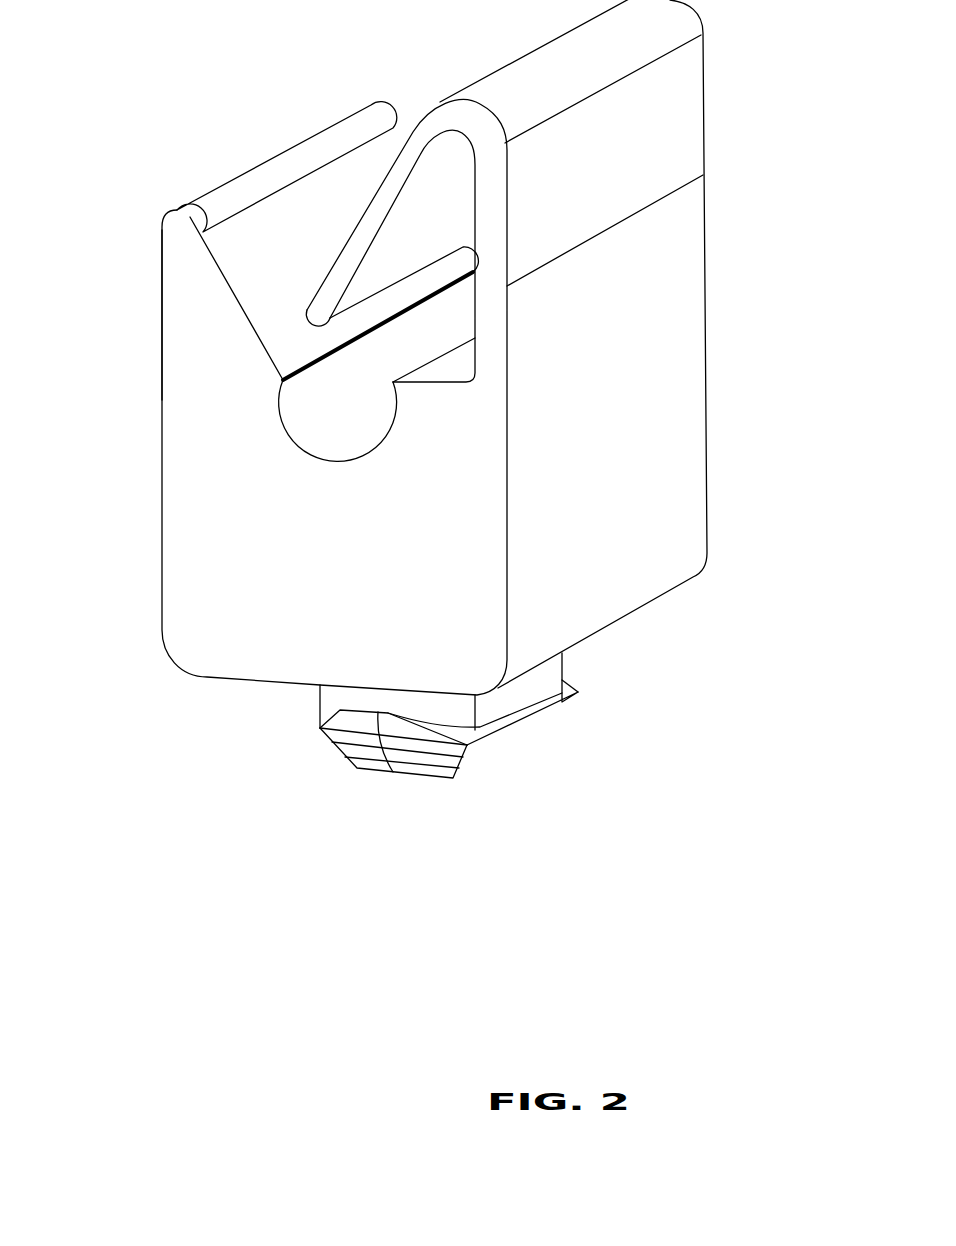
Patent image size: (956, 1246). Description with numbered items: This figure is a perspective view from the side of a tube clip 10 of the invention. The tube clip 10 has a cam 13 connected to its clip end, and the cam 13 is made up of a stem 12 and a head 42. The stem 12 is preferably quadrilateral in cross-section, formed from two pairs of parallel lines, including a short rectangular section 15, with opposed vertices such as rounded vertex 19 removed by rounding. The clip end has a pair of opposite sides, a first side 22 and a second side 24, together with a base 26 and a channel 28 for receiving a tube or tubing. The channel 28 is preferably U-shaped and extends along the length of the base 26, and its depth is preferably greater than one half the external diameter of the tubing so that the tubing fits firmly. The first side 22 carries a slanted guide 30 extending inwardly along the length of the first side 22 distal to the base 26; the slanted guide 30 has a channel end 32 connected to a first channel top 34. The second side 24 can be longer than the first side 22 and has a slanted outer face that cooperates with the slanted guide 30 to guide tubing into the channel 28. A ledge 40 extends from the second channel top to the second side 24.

The tube clip 10 is at (101, 77).
The stem 12 is at (453, 717).
The cam 13 is at (382, 703).
The short rectangular section 15 is at (322, 702).
The rounded vertex 19 is at (505, 712).
The first side 22 is at (160, 247).
The second side 24 is at (637, 146).
The base 26 is at (203, 507).
The channel 28 is at (280, 423).
The slanted guide 30 is at (281, 176).
The channel end 32 is at (273, 337).
The first channel top 34 is at (280, 379).
The ledge 40 is at (437, 382).
The head 42 is at (433, 757).